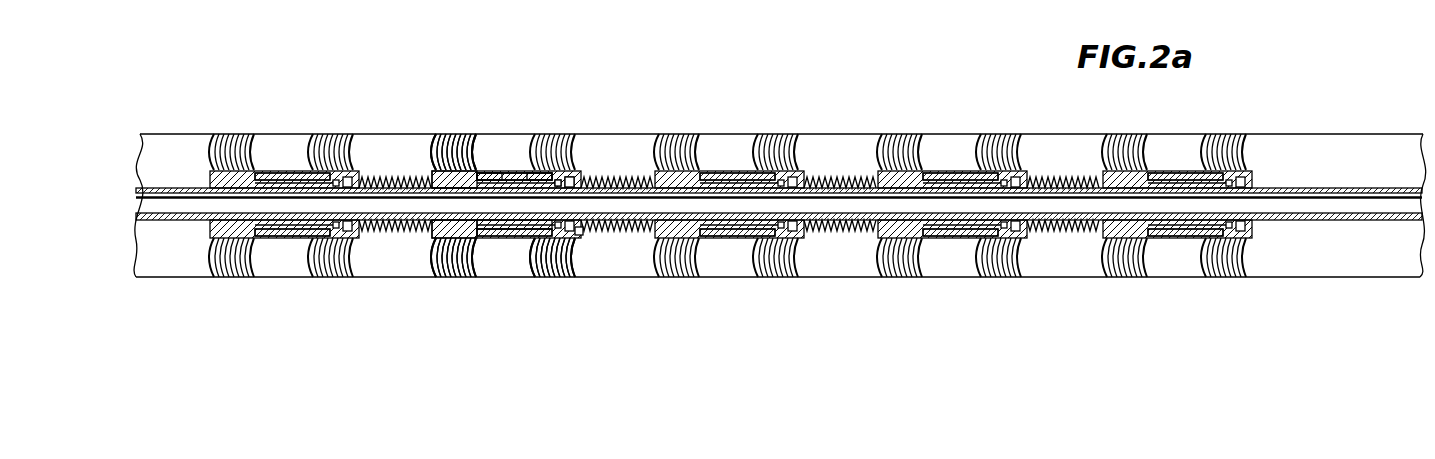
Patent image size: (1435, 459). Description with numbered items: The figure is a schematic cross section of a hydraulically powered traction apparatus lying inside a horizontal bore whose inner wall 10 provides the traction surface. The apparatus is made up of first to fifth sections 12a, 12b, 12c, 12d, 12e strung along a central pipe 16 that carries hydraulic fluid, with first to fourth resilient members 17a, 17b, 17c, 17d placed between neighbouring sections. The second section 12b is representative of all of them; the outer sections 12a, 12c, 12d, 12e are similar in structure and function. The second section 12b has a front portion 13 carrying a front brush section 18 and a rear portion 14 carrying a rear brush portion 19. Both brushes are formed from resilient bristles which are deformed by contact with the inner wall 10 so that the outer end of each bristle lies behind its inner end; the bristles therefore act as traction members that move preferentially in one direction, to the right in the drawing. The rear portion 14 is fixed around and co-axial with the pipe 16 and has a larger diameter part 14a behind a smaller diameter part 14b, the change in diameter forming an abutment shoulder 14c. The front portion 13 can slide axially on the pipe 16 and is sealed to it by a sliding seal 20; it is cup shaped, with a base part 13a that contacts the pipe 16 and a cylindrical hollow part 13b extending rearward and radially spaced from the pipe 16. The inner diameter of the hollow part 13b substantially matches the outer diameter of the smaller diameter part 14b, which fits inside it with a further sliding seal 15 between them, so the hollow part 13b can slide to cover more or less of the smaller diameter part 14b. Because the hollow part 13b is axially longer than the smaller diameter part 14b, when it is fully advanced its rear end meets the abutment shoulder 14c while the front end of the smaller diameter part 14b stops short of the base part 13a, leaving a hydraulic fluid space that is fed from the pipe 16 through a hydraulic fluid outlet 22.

The inner wall 10 is at (150, 137).
The first section 12a is at (273, 264).
The second section 12b is at (500, 263).
The third section 12c is at (727, 265).
The fourth section 12d is at (950, 263).
The fifth section 12e is at (1183, 263).
The front portion 13 is at (521, 172).
The base part 13a is at (579, 172).
The cylindrical hollow part 13b is at (496, 172).
The rear portion 14 is at (428, 170).
The larger diameter part 14a is at (437, 240).
The smaller diameter part 14b is at (515, 224).
The abutment shoulder 14c is at (464, 240).
The sliding seal 15 is at (557, 263).
The pipe 16 is at (1332, 188).
The first resilient member 17a is at (372, 233).
The second resilient member 17b is at (627, 238).
The third resilient member 17c is at (850, 233).
The fourth resilient member 17d is at (1083, 238).
The front brush section 18 is at (575, 170).
The rear brush portion 19 is at (482, 166).
The sliding seal 20 is at (588, 232).
The hydraulic fluid outlet 22 is at (570, 165).